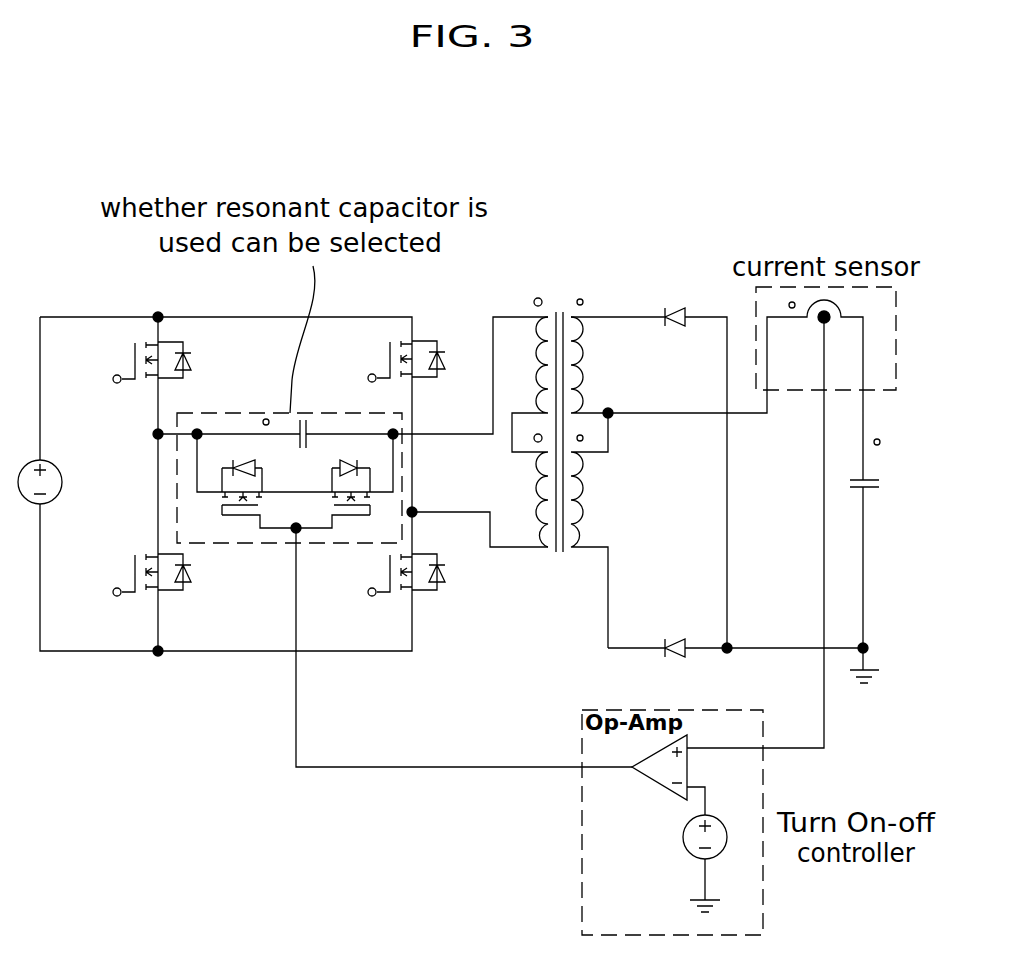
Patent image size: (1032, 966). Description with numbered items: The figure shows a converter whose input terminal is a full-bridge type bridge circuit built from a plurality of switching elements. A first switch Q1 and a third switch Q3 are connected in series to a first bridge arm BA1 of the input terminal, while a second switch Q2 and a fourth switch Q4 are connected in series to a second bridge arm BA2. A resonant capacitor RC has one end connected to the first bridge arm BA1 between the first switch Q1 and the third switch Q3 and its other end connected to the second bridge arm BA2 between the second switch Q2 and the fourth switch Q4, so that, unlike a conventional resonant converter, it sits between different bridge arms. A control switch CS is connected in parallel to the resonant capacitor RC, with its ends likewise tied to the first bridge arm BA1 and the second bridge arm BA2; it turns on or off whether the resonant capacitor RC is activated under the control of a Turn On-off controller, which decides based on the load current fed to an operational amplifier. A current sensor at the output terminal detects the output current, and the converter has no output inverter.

The first switch Q1 is at (144, 362).
The second switch Q2 is at (397, 361).
The third switch Q3 is at (145, 567).
The fourth switch Q4 is at (395, 575).
The first bridge arm BA1 is at (327, 383).
The second bridge arm BA2 is at (477, 515).
The resonant capacitor RC is at (320, 432).
The control switch CS is at (332, 476).